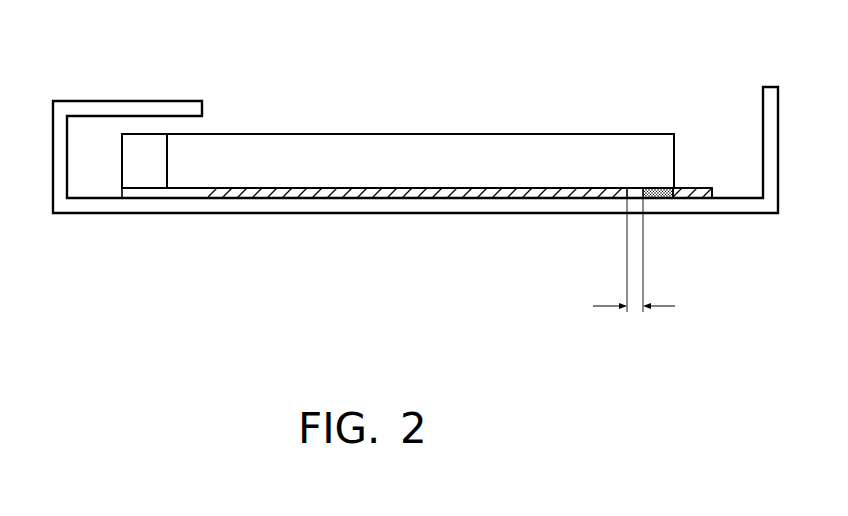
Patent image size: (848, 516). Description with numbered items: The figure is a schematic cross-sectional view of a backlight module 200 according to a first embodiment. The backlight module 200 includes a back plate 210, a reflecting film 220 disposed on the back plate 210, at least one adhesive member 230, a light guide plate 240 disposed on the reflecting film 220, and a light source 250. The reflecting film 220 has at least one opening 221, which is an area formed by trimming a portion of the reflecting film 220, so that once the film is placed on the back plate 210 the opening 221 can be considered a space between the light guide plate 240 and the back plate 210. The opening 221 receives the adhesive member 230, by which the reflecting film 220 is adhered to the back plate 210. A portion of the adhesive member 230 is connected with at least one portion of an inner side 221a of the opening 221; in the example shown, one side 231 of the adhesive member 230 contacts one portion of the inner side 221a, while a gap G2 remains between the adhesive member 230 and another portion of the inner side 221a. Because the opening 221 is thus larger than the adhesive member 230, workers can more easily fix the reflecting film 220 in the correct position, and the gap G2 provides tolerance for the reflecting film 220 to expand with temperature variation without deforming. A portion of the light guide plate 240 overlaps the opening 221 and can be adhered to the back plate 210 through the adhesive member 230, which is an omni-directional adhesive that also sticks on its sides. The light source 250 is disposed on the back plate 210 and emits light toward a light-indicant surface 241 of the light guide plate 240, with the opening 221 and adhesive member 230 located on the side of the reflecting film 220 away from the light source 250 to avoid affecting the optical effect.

The backlight module 200 is at (58, 21).
The back plate 210 is at (93, 203).
The reflecting film 220 is at (402, 193).
The opening 221 is at (630, 188).
The inner side of the opening 221a is at (668, 203).
The adhesive member 230 is at (657, 200).
The side of the adhesive member 231 is at (683, 188).
The light guide plate 240 is at (453, 147).
The light-indicant surface 241 is at (168, 160).
The light source 250 is at (147, 170).
The gap G2 is at (634, 270).